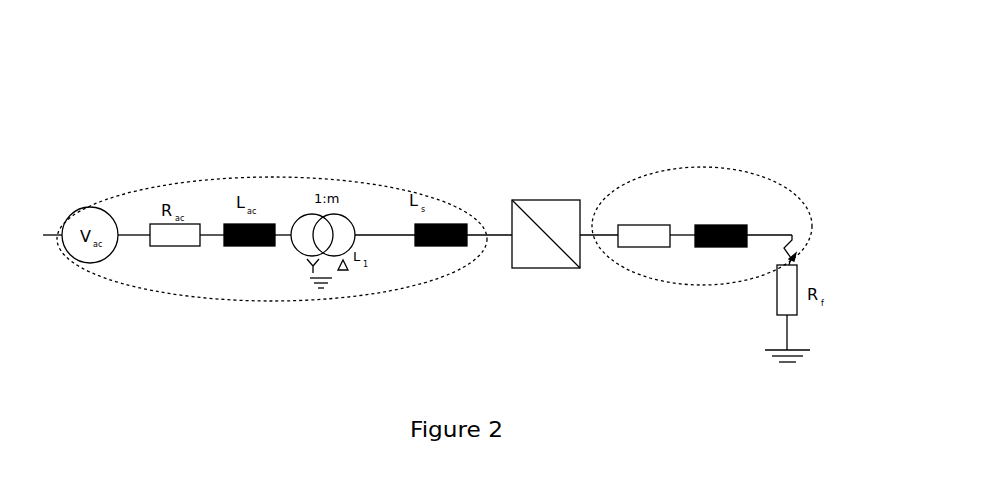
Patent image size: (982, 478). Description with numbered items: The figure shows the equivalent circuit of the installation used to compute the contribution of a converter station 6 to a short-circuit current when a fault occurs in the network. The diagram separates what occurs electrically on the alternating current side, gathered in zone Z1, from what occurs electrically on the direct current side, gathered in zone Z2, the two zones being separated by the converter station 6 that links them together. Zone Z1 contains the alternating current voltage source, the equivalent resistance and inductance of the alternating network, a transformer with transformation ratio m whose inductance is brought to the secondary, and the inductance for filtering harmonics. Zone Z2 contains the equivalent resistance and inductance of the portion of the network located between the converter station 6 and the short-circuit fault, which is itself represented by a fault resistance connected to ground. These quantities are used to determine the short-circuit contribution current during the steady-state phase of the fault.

The converter station 6 is at (525, 198).
The alternating current side zone Z1 is at (243, 177).
The direct current side zone Z2 is at (697, 168).